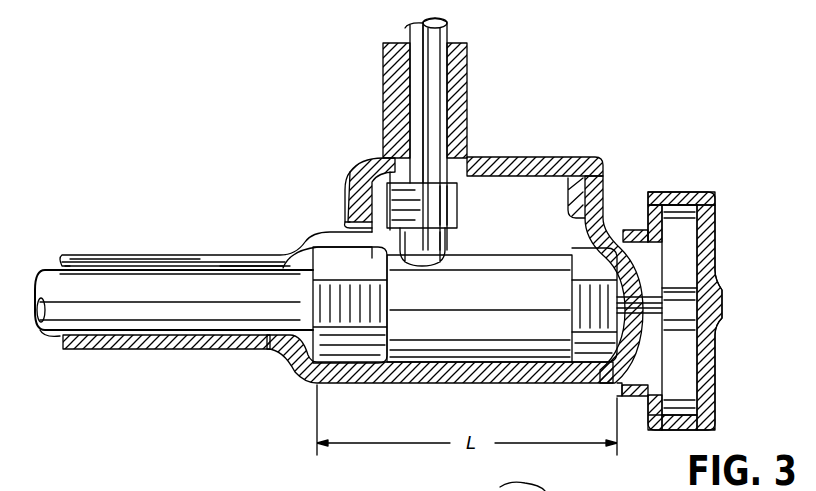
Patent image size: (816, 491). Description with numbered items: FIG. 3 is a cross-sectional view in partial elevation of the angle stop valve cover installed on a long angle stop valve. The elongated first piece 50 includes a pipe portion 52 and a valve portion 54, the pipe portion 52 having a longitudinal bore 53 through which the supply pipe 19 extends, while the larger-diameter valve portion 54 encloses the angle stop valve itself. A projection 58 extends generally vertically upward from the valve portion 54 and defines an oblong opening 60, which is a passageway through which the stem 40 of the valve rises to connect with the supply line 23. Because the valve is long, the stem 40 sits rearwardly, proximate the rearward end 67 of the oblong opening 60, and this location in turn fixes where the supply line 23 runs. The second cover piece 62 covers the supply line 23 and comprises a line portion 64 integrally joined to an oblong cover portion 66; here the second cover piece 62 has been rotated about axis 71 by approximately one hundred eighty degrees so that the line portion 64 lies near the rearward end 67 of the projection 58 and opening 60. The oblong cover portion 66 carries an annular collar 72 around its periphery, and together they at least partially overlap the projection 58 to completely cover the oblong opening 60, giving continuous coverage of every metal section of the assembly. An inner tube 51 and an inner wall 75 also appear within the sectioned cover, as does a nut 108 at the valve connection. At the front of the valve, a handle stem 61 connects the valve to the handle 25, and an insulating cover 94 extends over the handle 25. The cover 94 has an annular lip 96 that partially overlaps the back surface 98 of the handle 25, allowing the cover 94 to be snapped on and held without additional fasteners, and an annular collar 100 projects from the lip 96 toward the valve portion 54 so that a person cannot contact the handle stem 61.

The supply pipe 19 is at (95, 270).
The supply line 23 is at (415, 86).
The handle 25 is at (680, 236).
The stem 40 is at (455, 235).
The first piece 50 is at (165, 362).
The inner tube 51 is at (160, 255).
The pipe portion 52 is at (78, 350).
The longitudinal bore 53 is at (58, 336).
The valve portion 54 is at (370, 373).
The projection 58 is at (607, 172).
The oblong opening 60 is at (533, 168).
The handle stem 61 is at (655, 298).
The second cover piece 62 is at (375, 120).
The line portion 64 is at (470, 82).
The oblong cover portion 66 is at (372, 160).
The rearward end 67 is at (350, 180).
The axis 71 is at (425, 108).
The annular collar 72 is at (348, 200).
The inner wall 75 is at (605, 200).
The cover 94 is at (715, 190).
The annular lip 96 is at (665, 386).
The back surface 98 is at (650, 365).
The annular collar 100 is at (630, 396).
The nut 108 is at (460, 192).